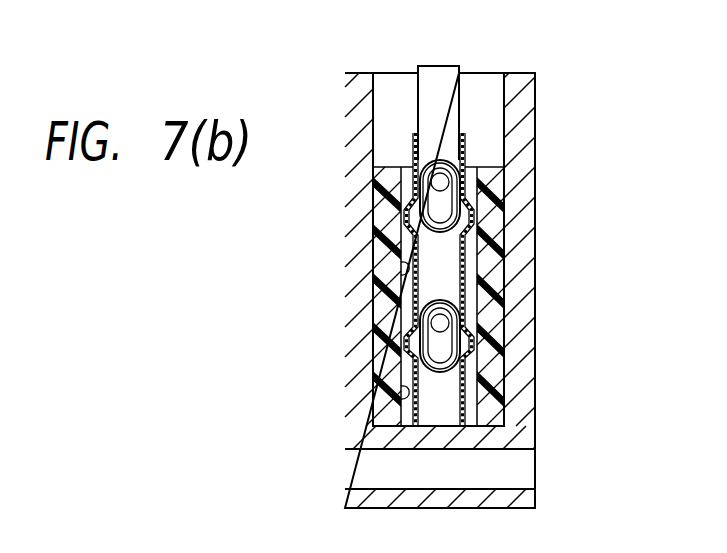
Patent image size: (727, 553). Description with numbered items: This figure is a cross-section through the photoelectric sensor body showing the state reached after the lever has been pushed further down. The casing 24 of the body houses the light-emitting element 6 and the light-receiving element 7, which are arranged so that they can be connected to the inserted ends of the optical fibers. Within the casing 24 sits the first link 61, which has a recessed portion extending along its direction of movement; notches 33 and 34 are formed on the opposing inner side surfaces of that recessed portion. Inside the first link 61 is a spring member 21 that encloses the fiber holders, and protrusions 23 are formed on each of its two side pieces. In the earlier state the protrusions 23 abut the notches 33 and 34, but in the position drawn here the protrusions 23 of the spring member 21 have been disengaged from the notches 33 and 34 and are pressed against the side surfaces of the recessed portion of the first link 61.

The casing 24 is at (528, 128).
The first link 61 is at (440, 88).
The spring member 21 is at (470, 266).
The protrusions 23 is at (486, 243).
The light-receiving element 7 is at (440, 182).
The light-emitting element 6 is at (440, 323).
The notch 33 is at (400, 268).
The notch 34 is at (400, 392).